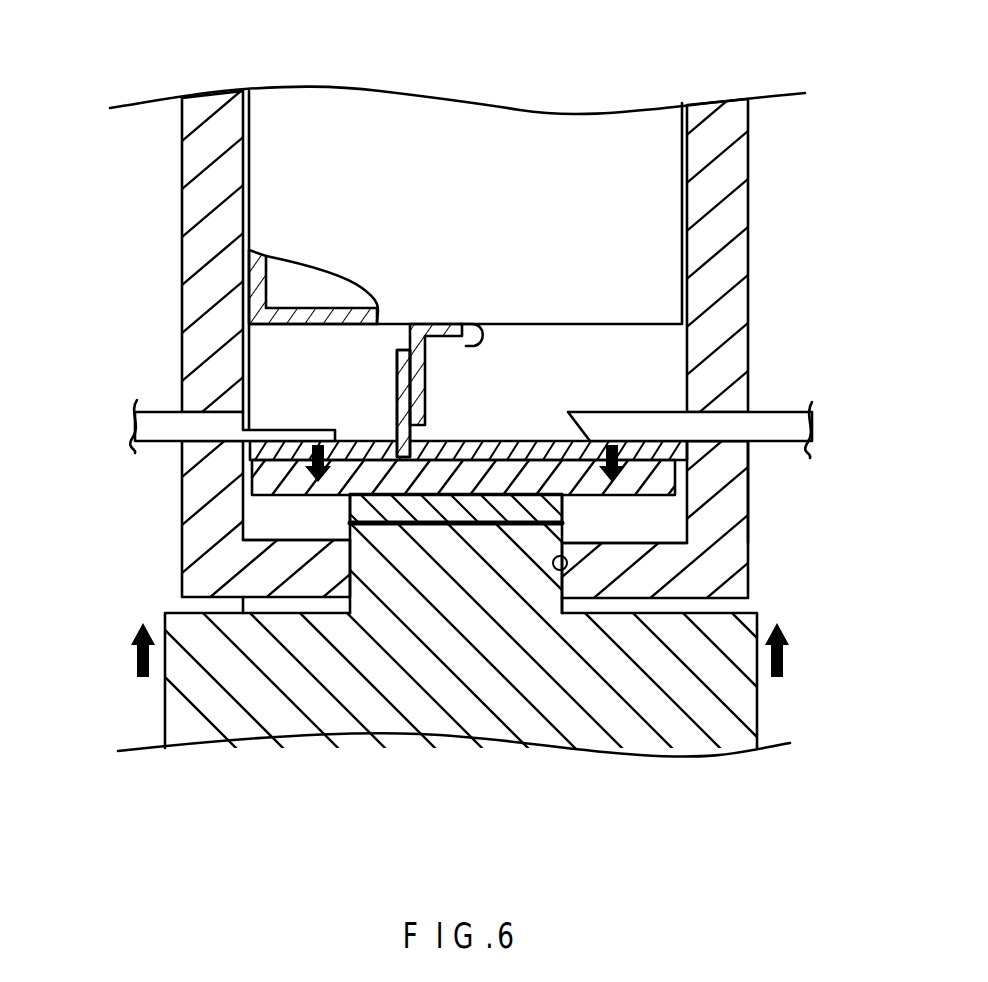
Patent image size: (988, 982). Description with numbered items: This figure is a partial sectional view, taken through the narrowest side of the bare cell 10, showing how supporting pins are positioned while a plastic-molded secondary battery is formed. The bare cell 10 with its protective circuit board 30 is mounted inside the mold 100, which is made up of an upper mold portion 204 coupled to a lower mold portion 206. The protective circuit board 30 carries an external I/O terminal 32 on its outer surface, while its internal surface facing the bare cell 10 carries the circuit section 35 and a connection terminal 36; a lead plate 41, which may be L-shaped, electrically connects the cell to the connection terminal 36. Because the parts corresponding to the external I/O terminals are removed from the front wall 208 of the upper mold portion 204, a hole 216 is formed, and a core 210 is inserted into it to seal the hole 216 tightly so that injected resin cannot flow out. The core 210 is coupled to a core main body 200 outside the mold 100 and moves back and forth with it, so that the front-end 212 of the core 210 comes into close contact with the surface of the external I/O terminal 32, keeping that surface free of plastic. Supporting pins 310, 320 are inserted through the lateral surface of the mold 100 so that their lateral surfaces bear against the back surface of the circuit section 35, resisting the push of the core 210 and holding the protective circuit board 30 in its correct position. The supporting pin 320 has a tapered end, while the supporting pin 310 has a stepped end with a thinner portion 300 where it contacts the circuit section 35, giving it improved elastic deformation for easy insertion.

The bare cell 10 is at (522, 125).
The mold 100 is at (730, 208).
The lower mold portion 206 is at (766, 268).
The upper mold portion 204 is at (766, 477).
The hole 216 is at (585, 576).
The front wall 208 is at (243, 613).
The core main body 200 is at (378, 717).
The core 210 is at (378, 568).
The front-end 212 is at (503, 530).
The external I/O terminal 32 is at (562, 505).
The protective circuit board 30 is at (289, 490).
The circuit section 35 is at (546, 440).
The supporting pin 310 is at (167, 420).
The supporting pin 320 is at (770, 418).
The thinner portion 300 is at (308, 432).
The connection terminal 36 is at (393, 388).
The lead plate 41 is at (478, 322).